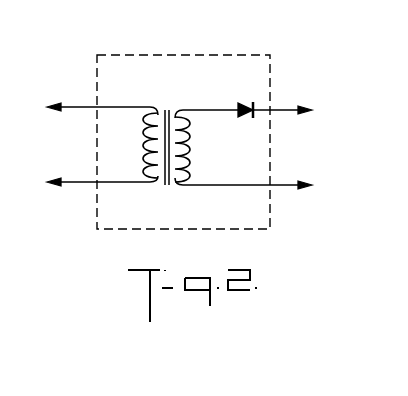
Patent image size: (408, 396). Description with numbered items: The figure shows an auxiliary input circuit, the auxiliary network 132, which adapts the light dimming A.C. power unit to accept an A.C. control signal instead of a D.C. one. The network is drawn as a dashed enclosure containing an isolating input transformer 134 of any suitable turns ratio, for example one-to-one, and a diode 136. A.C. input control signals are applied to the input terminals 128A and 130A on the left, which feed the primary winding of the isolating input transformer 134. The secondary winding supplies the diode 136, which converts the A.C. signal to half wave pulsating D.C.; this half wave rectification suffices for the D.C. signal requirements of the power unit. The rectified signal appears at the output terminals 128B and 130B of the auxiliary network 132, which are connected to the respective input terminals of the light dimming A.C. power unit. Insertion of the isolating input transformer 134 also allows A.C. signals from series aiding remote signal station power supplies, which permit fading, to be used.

The input terminal 128A is at (77, 88).
The input terminal 130A is at (76, 171).
The output terminal 128B is at (283, 107).
The output terminal 130B is at (275, 188).
The auxiliary network 132 is at (268, 148).
The isolating input transformer 134 is at (168, 106).
The diode 136 is at (246, 103).